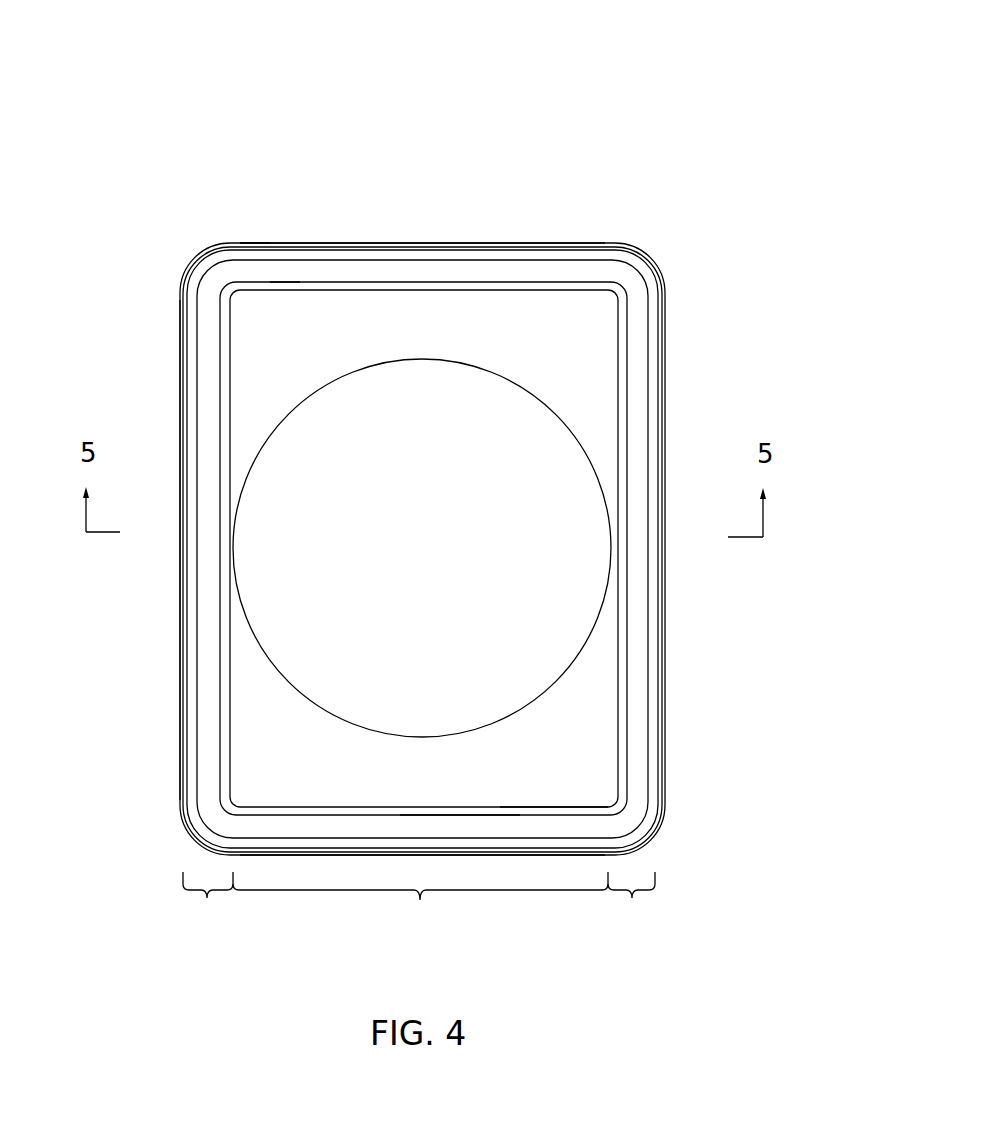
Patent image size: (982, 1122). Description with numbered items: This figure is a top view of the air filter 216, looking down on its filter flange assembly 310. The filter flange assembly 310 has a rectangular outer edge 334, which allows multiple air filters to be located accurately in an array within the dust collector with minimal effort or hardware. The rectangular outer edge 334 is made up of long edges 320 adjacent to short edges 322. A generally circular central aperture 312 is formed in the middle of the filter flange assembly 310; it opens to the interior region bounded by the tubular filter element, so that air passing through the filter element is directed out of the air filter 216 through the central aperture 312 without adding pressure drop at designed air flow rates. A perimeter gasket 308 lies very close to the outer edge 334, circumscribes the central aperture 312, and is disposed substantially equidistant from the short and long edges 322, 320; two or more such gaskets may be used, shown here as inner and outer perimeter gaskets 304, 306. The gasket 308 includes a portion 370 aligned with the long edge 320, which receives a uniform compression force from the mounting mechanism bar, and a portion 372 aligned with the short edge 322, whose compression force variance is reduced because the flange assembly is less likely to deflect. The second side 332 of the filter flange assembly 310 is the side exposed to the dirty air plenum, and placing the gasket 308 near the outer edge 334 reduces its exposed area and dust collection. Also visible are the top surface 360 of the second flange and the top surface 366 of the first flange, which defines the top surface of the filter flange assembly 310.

The air filter 216 is at (400, 66).
The inner perimeter gasket 304 is at (620, 345).
The outer perimeter gasket 306 is at (655, 357).
The perimeter gasket 308 is at (286, 274).
The filter flange assembly 310 is at (590, 775).
The central aperture 312 is at (497, 722).
The long edges 320 is at (178, 603).
The short edges 322 is at (348, 245).
The second side 332 is at (555, 322).
The rectangular outer edge 334 is at (645, 255).
The top surface of the second flange 360 is at (178, 742).
The top surface of the first flange 366 is at (462, 787).
The portion of the gasket aligned with the long edge 370 is at (419, 902).
The portion of the gasket aligned with the short edge 372 is at (420, 909).